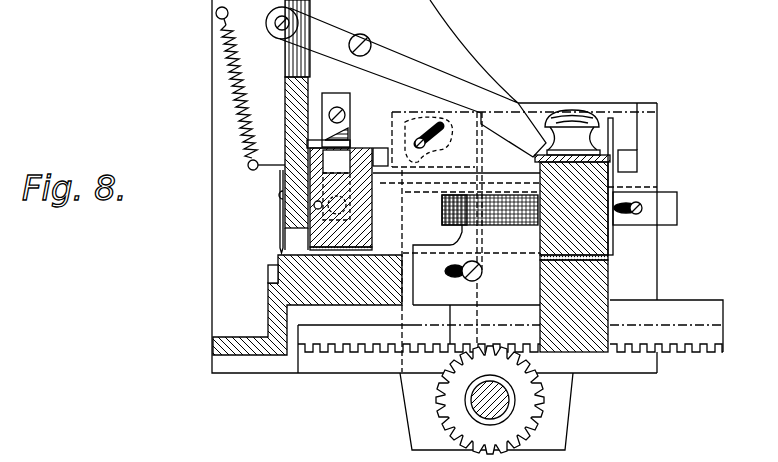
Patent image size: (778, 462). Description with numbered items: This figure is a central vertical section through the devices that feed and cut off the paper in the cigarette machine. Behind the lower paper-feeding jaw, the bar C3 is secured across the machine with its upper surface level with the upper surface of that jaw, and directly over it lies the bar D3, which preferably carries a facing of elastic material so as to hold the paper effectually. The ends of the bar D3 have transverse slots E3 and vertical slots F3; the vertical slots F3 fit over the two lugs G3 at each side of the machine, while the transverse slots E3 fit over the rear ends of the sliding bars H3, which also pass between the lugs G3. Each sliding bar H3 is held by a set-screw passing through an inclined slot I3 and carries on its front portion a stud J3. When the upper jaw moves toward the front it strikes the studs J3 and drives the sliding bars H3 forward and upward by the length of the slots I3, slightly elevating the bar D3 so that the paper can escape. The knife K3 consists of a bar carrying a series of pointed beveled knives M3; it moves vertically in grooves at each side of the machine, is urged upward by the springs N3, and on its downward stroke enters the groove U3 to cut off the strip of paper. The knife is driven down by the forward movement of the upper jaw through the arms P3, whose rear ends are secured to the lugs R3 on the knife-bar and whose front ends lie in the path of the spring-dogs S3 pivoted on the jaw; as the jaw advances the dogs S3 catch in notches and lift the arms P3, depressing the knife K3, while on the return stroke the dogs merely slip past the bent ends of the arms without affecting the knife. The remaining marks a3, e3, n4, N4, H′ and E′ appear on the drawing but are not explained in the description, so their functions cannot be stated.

The springs N3 is at (236, 82).
The knife K3 is at (266, 206).
The pointed beveled knives M3 is at (280, 222).
The lugs R3 is at (284, 125).
The transverse slots E3 is at (297, 177).
The arms P3 is at (392, 56).
The pivot screw a3 is at (331, 38).
The inclined slots I3 is at (545, 132).
The spring-dogs S3 is at (516, 186).
The sliding bars H3 is at (496, 156).
The studs J3 is at (624, 158).
The plate n4 is at (572, 179).
The spring seat N4 is at (561, 244).
The vertical slots F3 is at (337, 120).
The bar D3 is at (341, 199).
The lugs G3 is at (336, 161).
The pin e3 is at (329, 206).
The arm H′ is at (383, 174).
The link E′ is at (376, 176).
The bar C3 is at (307, 305).
The groove U3 is at (260, 274).